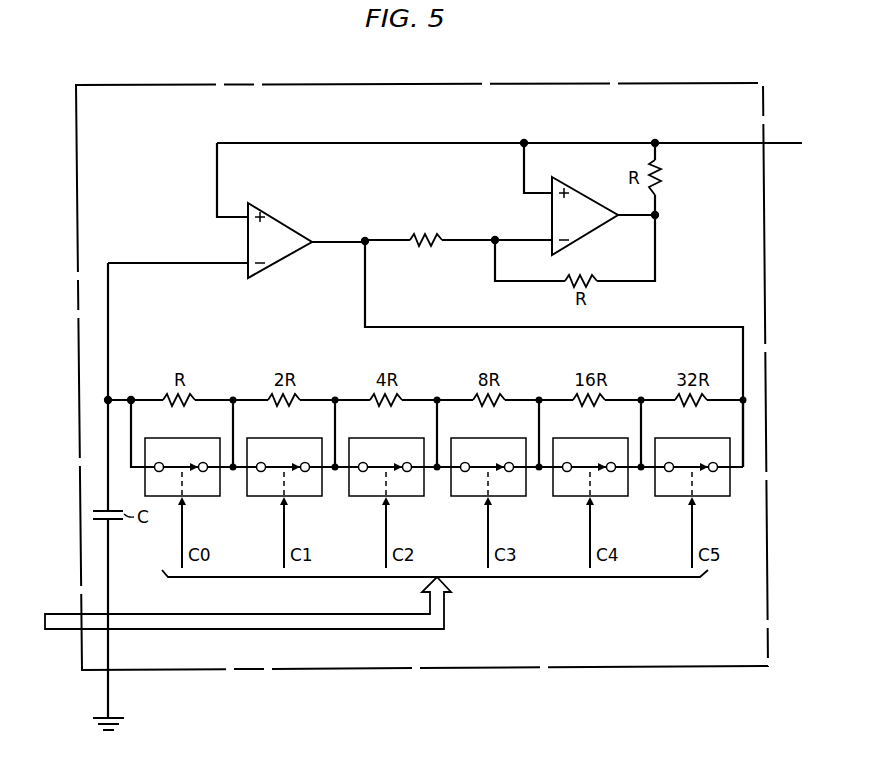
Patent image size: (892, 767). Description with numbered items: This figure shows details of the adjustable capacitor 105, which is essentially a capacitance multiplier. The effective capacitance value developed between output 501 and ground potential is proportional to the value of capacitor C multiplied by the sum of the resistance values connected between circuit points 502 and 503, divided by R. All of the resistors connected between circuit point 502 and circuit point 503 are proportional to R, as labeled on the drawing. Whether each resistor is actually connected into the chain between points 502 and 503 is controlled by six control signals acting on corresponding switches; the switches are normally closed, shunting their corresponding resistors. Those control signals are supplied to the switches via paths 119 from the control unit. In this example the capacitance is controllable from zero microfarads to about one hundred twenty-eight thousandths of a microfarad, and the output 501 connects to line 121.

The adjustable capacitor 105 is at (508, 83).
The output 501 is at (656, 141).
The output line 121 is at (790, 135).
The circuit point 503 is at (318, 242).
The circuit point 502 is at (110, 398).
The paths 119 is at (65, 600).